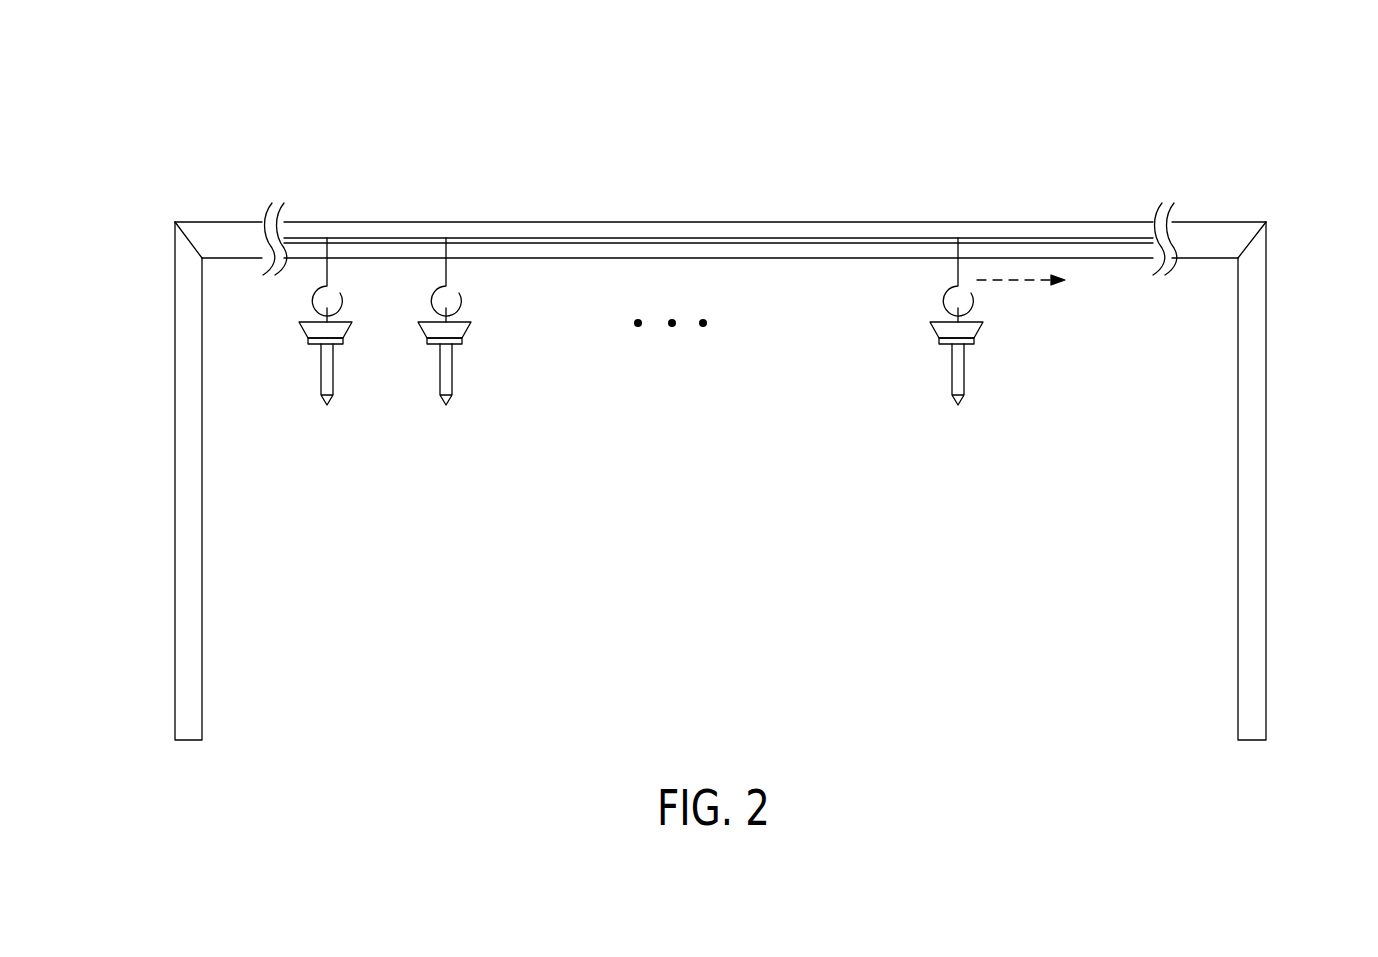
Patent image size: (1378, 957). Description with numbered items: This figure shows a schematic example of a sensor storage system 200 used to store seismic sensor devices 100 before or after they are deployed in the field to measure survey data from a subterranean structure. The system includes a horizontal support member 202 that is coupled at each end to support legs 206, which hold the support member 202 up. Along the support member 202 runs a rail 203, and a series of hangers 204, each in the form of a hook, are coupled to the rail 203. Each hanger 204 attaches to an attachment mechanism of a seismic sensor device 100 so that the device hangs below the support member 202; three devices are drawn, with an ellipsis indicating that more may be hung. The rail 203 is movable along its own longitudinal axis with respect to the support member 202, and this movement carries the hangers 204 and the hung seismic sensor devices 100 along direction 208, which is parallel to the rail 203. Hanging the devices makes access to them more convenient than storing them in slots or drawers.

The sensor storage system 200 is at (720, 413).
The support member 202 is at (712, 222).
The rail 203 is at (487, 241).
The hanger 204 is at (300, 293).
The support leg 206 is at (176, 480).
The direction 208 is at (1012, 283).
The seismic sensor device 100 is at (300, 365).